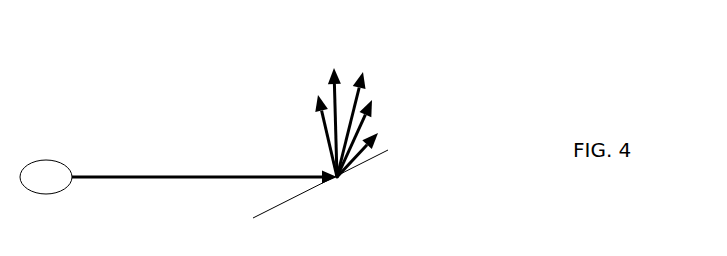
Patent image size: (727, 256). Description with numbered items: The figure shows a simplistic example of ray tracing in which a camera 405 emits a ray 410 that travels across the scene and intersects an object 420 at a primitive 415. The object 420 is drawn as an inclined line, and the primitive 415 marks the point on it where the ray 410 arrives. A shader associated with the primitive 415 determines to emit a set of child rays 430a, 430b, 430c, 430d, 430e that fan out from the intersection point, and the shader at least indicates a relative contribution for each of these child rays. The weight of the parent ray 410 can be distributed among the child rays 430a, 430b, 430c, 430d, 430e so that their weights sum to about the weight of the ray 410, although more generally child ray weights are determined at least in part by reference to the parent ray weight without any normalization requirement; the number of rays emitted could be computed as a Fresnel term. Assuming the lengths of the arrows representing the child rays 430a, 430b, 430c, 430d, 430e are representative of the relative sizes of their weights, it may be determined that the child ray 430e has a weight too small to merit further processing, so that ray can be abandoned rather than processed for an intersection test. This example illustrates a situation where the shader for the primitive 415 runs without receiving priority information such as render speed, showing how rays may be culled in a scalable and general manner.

The camera 405 is at (48, 160).
The ray 410 is at (167, 175).
The primitive 415 is at (337, 180).
The object 420 is at (273, 210).
The child ray 430a is at (310, 112).
The child ray 430b is at (338, 66).
The child ray 430c is at (355, 82).
The child ray 430d is at (374, 116).
The child ray 430e is at (380, 144).